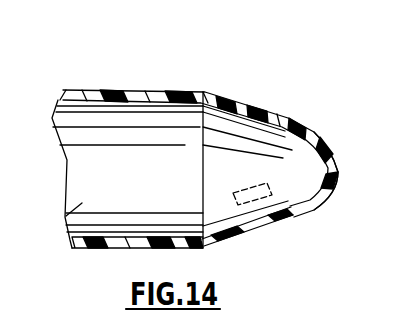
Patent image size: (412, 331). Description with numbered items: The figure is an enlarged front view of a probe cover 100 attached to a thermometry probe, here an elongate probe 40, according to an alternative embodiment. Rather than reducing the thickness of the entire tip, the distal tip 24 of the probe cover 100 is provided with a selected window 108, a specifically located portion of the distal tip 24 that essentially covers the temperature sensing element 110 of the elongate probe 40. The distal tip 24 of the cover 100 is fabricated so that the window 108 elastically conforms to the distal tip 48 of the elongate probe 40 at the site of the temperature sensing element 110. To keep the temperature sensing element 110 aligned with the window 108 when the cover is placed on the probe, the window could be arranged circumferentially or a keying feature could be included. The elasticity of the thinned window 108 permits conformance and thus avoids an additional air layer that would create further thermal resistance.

The probe cover 100 is at (117, 92).
The elongate probe 40 is at (66, 240).
The distal tip, probe 48 is at (297, 152).
The distal tip, cover 24 is at (338, 180).
The window 108 is at (273, 220).
The temperature sensing element 110 is at (242, 207).